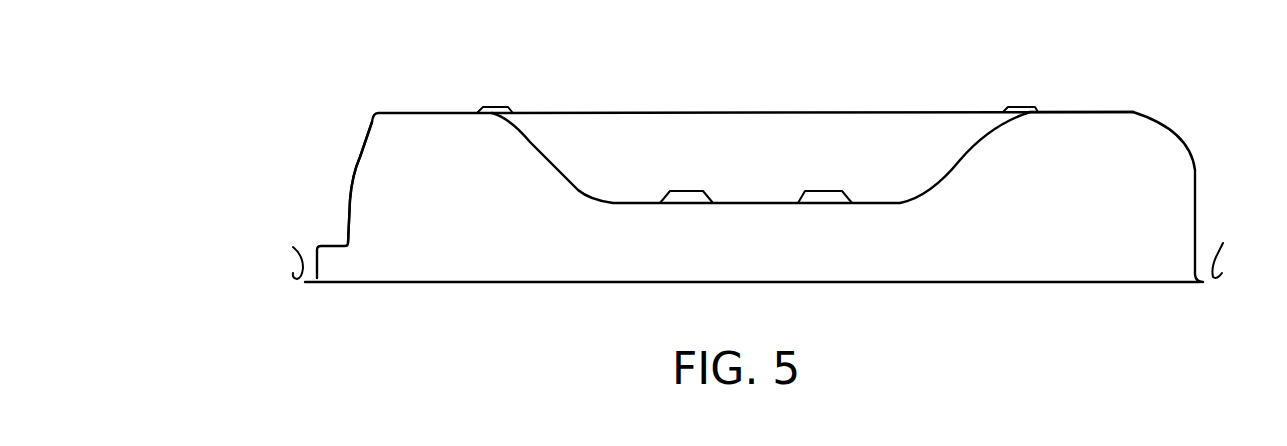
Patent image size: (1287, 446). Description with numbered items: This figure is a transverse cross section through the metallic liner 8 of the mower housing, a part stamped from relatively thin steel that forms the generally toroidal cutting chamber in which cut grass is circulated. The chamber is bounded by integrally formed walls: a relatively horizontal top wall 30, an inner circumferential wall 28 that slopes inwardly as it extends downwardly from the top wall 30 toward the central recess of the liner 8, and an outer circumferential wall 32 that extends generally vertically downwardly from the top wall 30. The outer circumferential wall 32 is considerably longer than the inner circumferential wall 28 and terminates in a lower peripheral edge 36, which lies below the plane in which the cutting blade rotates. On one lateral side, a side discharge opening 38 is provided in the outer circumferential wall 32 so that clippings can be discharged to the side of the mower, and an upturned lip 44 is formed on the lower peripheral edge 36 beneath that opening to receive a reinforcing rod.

The metallic liner 8 is at (783, 88).
The inner circumferential wall 28 is at (973, 151).
The top wall 30 is at (1073, 110).
The outer circumferential wall 32 is at (1193, 167).
The lower peripheral edge 36 is at (838, 283).
The side discharge opening 38 is at (350, 187).
The upturned lip 44 is at (763, 249).